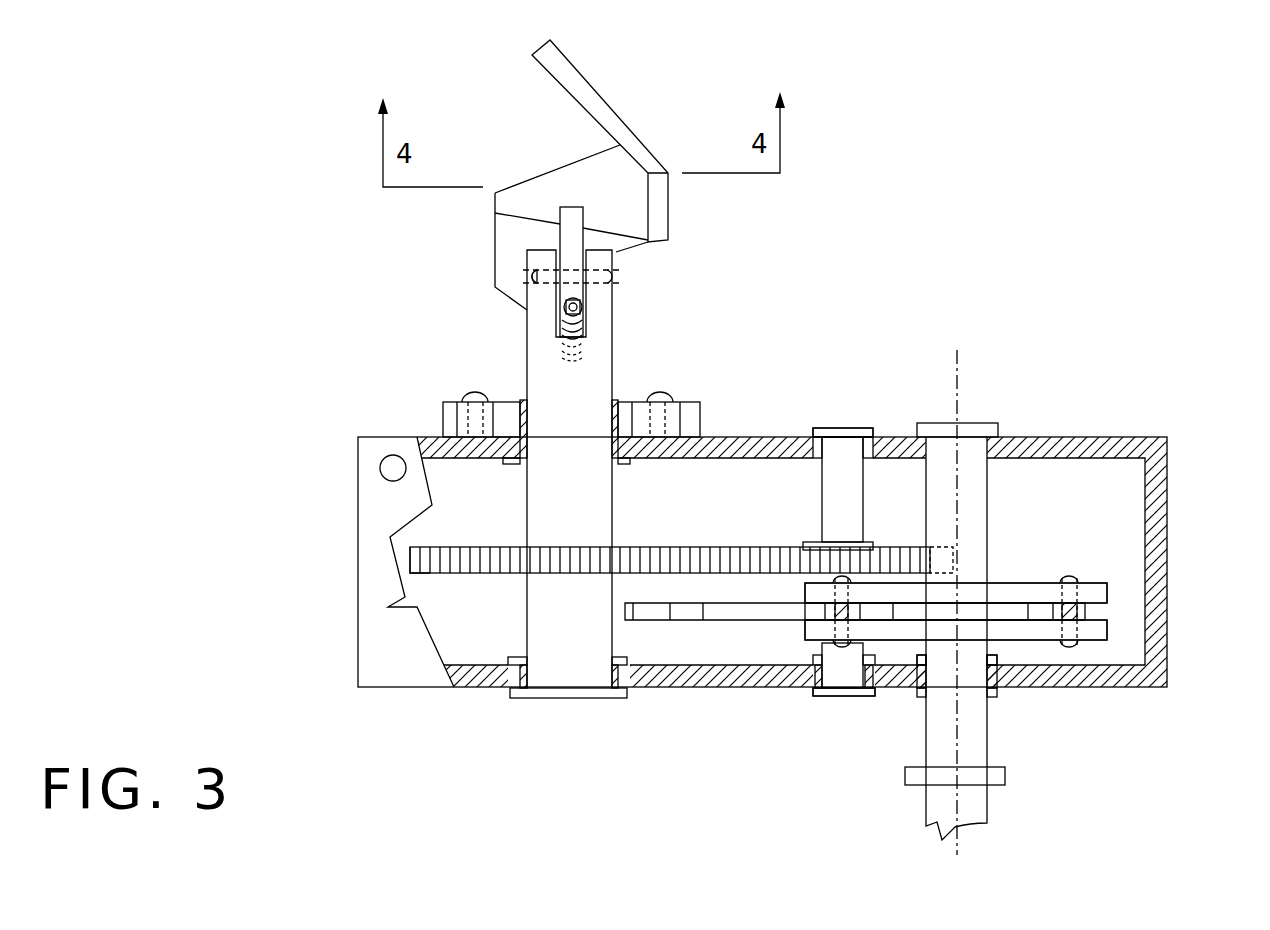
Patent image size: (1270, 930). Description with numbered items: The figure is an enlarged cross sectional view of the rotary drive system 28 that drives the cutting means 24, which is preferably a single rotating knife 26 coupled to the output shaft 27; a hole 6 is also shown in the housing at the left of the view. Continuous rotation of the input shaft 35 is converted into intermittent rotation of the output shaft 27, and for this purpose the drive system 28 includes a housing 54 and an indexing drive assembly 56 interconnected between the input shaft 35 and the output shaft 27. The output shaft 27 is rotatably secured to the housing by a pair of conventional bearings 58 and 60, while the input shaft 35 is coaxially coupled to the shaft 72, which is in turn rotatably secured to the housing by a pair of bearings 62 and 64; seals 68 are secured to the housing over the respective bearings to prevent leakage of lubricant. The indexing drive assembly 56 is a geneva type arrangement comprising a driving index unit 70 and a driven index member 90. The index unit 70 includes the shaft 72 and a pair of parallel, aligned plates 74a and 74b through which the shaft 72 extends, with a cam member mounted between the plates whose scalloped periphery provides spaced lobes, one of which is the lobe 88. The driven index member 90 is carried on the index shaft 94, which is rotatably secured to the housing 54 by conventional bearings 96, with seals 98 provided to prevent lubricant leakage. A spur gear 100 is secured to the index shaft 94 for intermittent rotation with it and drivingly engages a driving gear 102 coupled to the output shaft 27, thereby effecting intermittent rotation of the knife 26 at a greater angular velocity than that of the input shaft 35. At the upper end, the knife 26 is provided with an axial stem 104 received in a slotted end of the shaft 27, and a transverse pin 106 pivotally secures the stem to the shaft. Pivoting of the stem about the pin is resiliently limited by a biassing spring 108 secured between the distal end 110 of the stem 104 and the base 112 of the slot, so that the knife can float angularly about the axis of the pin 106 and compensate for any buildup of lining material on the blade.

The hole 6 is at (380, 463).
The cutting means 24 is at (536, 126).
The knife 26 is at (510, 230).
The output shaft 27 is at (568, 622).
The rotary drive system 28 is at (962, 325).
The input shaft 35 is at (940, 795).
The housing 54 is at (1157, 510).
The indexing drive assembly 56 is at (496, 500).
The bearing 58 is at (520, 400).
The bearing 60 is at (520, 673).
The bearing 62 is at (998, 438).
The bearing 64 is at (997, 673).
The seals 68 is at (613, 697).
The driving index unit 70 is at (992, 613).
The shaft 72 is at (937, 740).
The plate 74a is at (1107, 592).
The plate 74b is at (1107, 632).
The lobe 88 is at (959, 560).
The driven index member 90 is at (747, 604).
The index shaft 94 is at (847, 670).
The bearings 96 is at (813, 443).
The seals 98 is at (835, 428).
The spur gear 100 is at (775, 543).
The driving gear 102 is at (517, 560).
The axial stem 104 is at (560, 218).
The transverse pin 106 is at (622, 277).
The biassing spring 108 is at (563, 310).
The distal end 110 is at (525, 280).
The base 112 is at (595, 340).